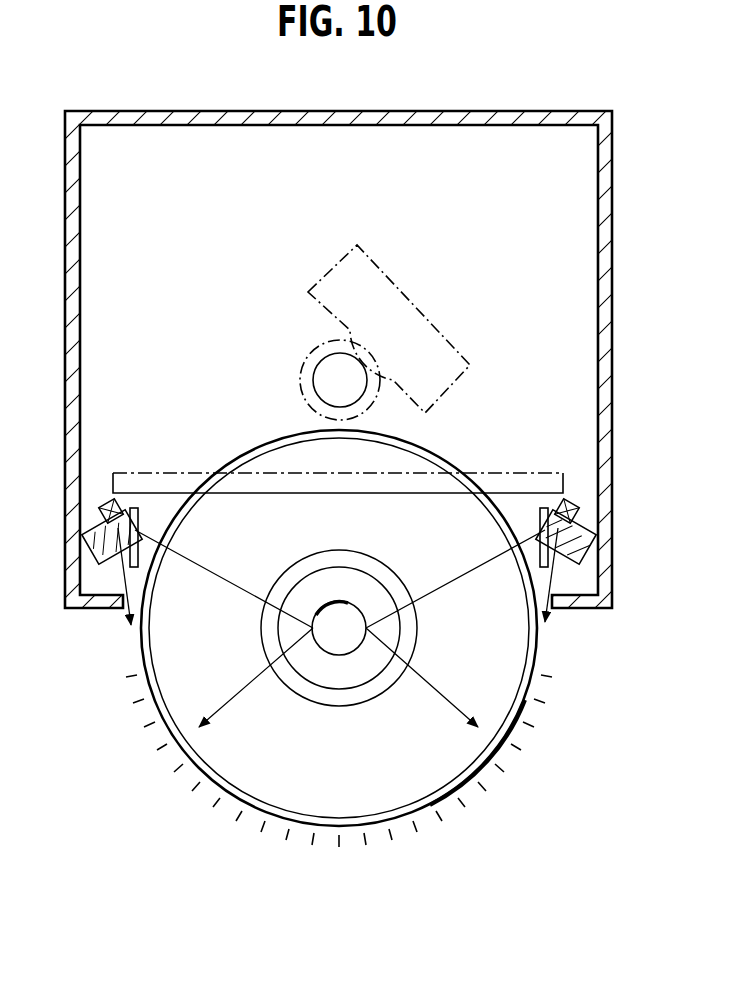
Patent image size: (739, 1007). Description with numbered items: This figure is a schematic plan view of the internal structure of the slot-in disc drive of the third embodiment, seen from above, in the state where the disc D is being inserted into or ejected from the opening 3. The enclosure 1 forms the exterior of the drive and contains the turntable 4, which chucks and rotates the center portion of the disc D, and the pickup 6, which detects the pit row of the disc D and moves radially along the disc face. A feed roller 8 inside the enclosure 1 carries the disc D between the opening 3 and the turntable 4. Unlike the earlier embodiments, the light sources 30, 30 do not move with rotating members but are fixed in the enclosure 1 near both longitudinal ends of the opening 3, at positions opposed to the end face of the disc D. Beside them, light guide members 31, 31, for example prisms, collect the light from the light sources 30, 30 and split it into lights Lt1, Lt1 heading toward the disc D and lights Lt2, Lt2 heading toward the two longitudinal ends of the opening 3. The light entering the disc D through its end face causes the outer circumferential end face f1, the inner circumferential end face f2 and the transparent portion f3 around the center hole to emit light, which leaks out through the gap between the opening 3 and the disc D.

The enclosure 1 is at (612, 259).
The opening 3 is at (121, 623).
The turntable 4 is at (300, 360).
The pickup 6 is at (393, 278).
The feed roller 8 is at (491, 470).
The light source 30 is at (104, 506).
The light guide member 31 is at (100, 534).
The light Lt1 is at (340, 628).
The light Lt2 is at (339, 587).
The outer circumferential end face f1 is at (466, 784).
The inner circumferential end face f2 is at (337, 682).
The transparent portion f3 is at (360, 653).
The disc D is at (505, 680).